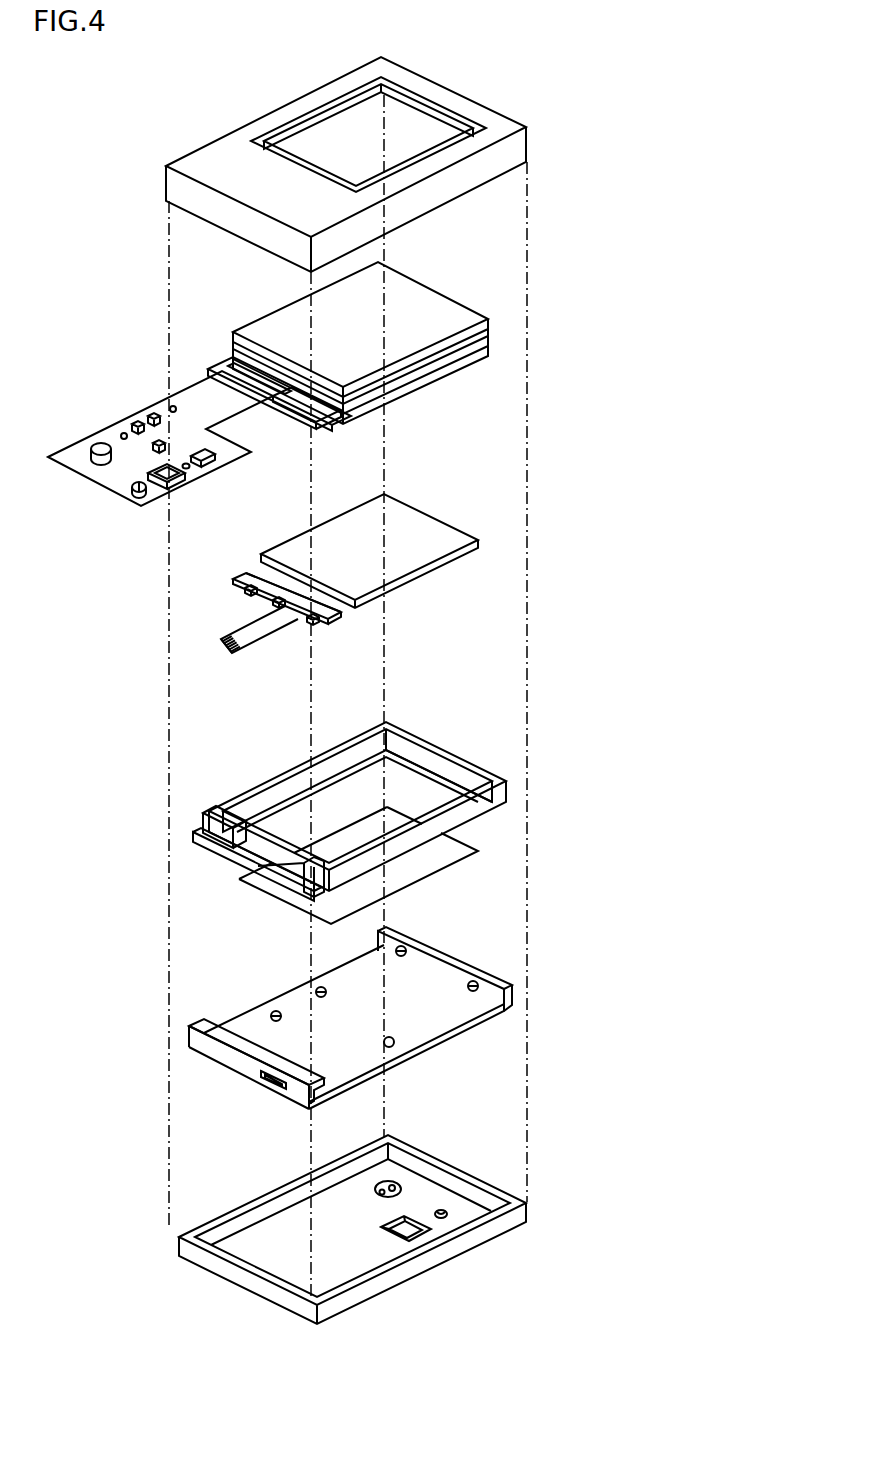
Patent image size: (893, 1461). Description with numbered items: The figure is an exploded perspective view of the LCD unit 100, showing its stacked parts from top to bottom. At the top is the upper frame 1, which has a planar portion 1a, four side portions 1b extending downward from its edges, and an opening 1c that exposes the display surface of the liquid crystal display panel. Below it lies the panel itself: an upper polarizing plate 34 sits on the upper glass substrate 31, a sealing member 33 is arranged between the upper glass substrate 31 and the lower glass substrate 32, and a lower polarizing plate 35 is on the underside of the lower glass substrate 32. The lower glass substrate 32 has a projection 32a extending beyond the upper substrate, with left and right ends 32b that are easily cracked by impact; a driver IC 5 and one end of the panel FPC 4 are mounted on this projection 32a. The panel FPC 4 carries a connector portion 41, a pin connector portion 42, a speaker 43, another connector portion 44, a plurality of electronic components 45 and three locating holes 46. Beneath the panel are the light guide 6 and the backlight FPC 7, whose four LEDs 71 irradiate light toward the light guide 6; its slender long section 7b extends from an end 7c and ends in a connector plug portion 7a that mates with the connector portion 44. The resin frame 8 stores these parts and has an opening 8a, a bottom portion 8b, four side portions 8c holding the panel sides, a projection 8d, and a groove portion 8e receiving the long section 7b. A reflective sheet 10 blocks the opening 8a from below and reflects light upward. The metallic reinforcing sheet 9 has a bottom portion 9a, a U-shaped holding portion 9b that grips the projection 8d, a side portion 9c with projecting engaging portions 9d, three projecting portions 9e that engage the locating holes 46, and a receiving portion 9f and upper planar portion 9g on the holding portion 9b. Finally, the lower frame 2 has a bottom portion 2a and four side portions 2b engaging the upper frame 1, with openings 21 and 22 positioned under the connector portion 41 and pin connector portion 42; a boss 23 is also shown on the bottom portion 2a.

The portable electronic device 100 is at (150, 98).
The upper frame 1 is at (278, 112).
The planar portion 1a is at (495, 122).
The side portions 1b is at (470, 177).
The opening 1c is at (417, 98).
The upper polarizing plate 34 is at (422, 307).
The upper glass substrate 31 is at (487, 325).
The sealing member 33 is at (487, 334).
The lower glass substrate 32 is at (487, 343).
The projection 32a is at (295, 402).
The left and right ends 32b is at (218, 368).
The lower polarizing plate 35 is at (487, 352).
The driver IC 5 is at (257, 380).
The panel FPC 4 is at (120, 468).
The connector portion 41 is at (167, 488).
The pin connector portion 42 is at (137, 498).
The speaker 43 is at (93, 452).
The connector portion 44 is at (220, 463).
The electronic components 45 is at (137, 427).
The locating holes 46 is at (123, 437).
The light guide 6 is at (407, 532).
The backlight FPC 7 is at (255, 582).
The connector plug portion 7a is at (220, 650).
The long section 7b is at (268, 627).
The end 7c is at (275, 598).
The LEDs 71 is at (242, 593).
The resin frame 8 is at (343, 740).
The opening 8a is at (390, 758).
The bottom portion 8b is at (448, 783).
The side portions 8c is at (430, 765).
The projection 8d is at (243, 850).
The groove portion 8e is at (277, 872).
The reflective sheet 10 is at (407, 873).
The reinforcing sheet 9 is at (290, 1008).
The bottom portion 9a is at (425, 1028).
The holding portion 9b is at (225, 1060).
The side portion 9c is at (442, 973).
The projecting engaging portions 9d is at (473, 982).
The projecting portions 9e is at (273, 1012).
The receiving portion 9f is at (263, 1088).
The upper planar portion 9g is at (253, 1052).
The lower frame 2 is at (272, 1192).
The bottom portion 2a is at (272, 1243).
The side portions 2b is at (340, 1175).
The opening 21 is at (423, 1235).
The opening 22 is at (447, 1217).
The boss 23 is at (397, 1187).